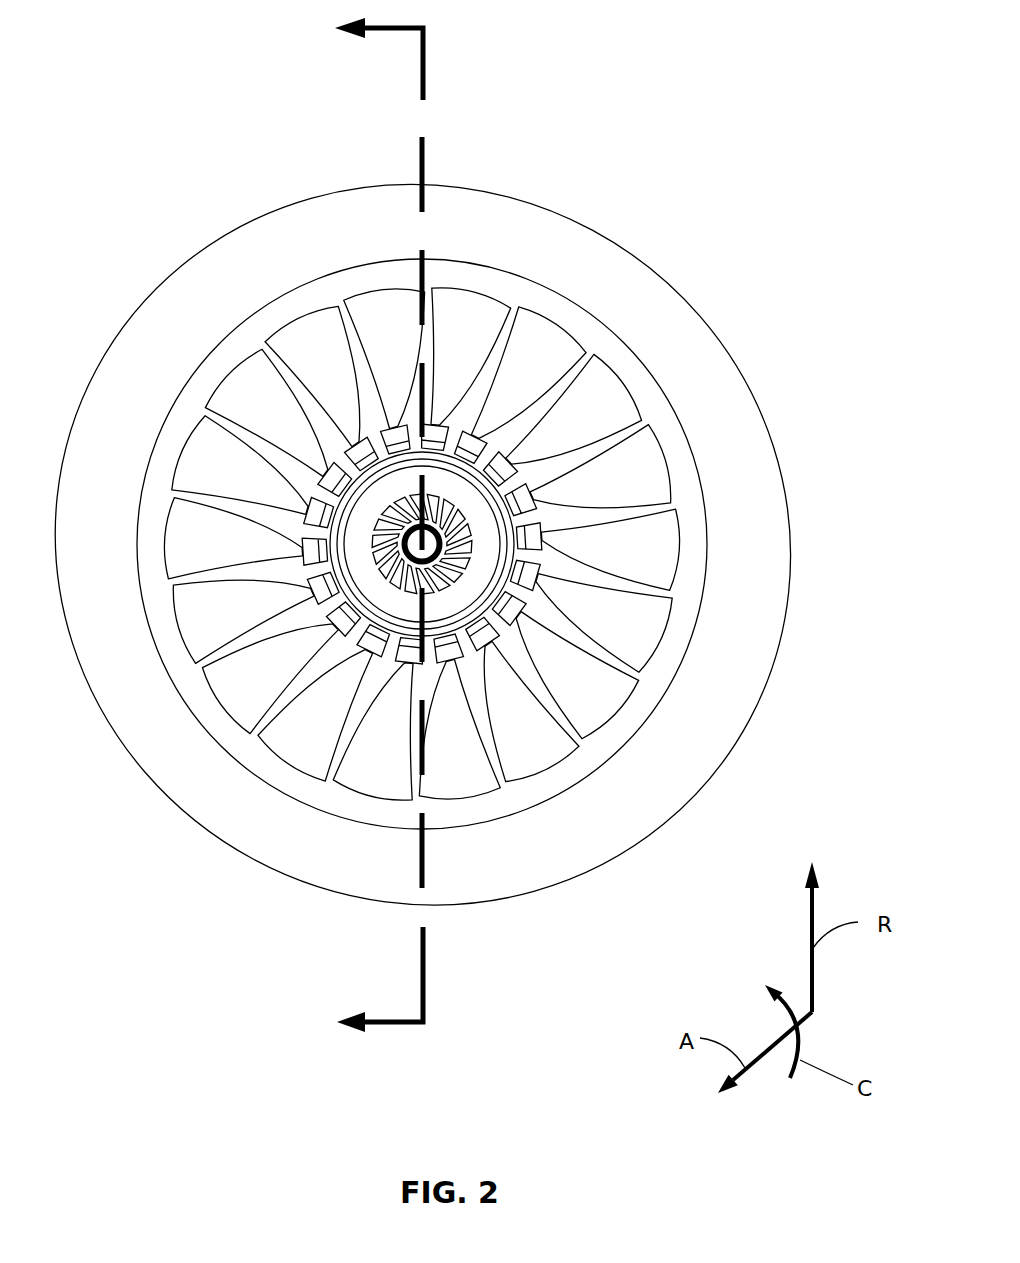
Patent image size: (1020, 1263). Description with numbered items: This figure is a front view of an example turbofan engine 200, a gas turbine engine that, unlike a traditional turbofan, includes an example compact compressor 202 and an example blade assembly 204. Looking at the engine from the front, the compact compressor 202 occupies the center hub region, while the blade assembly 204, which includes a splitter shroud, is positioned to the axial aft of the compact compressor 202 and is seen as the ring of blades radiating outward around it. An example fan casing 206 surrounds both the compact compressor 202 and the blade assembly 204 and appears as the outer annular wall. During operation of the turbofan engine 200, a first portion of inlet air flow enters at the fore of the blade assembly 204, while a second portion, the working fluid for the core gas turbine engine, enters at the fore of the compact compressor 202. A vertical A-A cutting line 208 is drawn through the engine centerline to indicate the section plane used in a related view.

The turbofan engine 200 is at (640, 140).
The compact compressor 202 is at (497, 483).
The blade assembly 204 is at (542, 348).
The fan casing 206 is at (193, 255).
The A-A cutting line 208 is at (425, 65).